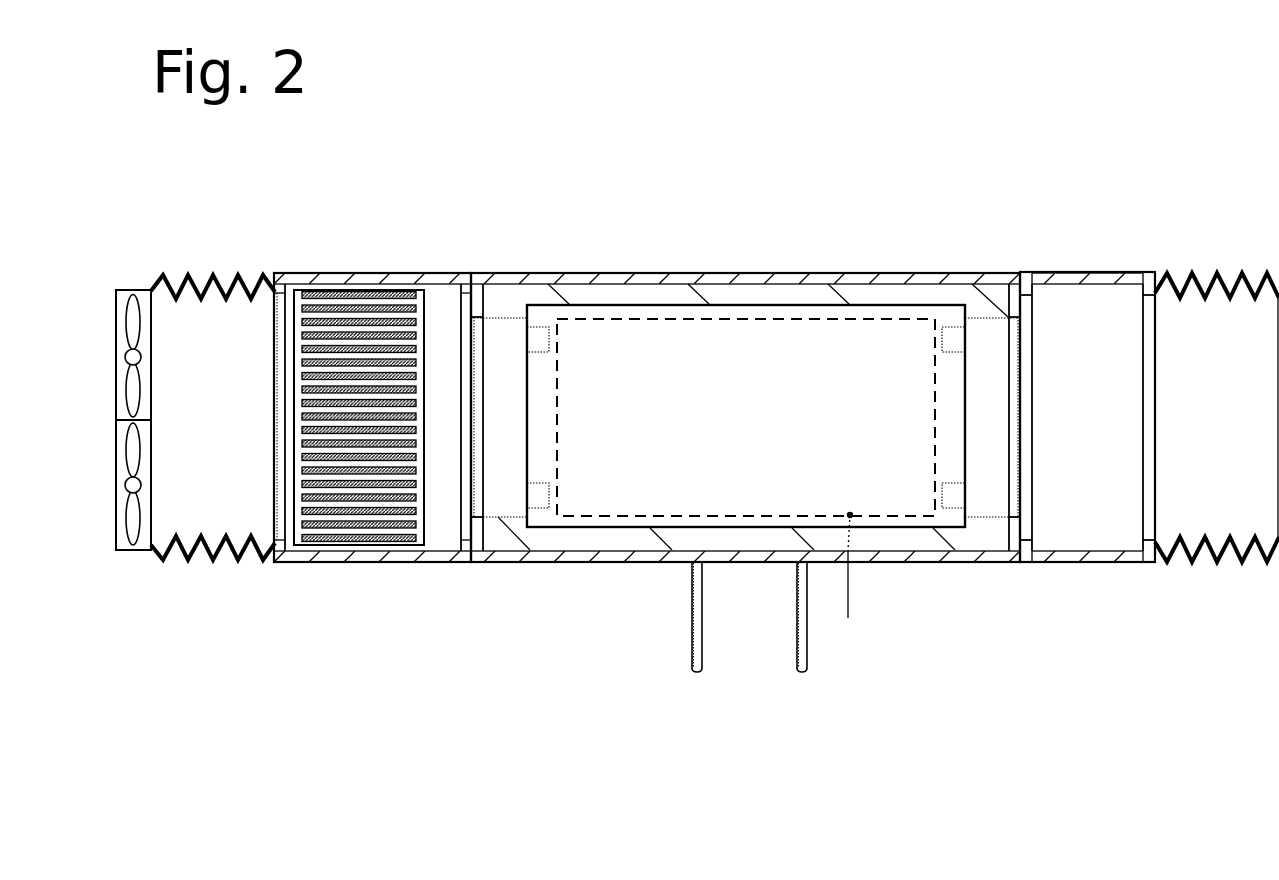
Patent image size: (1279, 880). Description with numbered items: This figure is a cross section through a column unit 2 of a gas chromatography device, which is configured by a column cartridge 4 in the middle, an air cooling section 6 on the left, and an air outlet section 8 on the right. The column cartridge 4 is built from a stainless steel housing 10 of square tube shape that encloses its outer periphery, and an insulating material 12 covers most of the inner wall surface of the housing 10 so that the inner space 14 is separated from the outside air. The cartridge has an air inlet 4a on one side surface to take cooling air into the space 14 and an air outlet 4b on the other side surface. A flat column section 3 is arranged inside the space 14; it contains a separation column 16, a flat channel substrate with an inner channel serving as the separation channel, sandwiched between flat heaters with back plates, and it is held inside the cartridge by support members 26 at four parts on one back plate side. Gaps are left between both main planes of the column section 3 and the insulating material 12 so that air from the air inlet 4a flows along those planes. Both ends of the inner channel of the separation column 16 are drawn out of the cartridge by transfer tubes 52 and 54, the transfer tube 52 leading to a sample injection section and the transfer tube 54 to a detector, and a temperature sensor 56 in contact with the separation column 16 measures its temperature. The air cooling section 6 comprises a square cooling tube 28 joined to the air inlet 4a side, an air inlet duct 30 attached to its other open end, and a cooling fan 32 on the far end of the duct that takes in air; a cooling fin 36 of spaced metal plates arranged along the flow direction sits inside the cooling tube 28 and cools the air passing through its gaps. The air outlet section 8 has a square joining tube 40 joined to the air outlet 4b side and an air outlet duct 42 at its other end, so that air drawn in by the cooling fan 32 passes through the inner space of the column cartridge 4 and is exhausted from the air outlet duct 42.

The column unit 2 is at (873, 195).
The column section 3 is at (748, 305).
The column cartridge 4 is at (942, 253).
The air inlet 4a is at (480, 473).
The air outlet 4b is at (1017, 472).
The air cooling section 6 is at (368, 253).
The air outlet section 8 is at (1143, 252).
The housing 10 is at (877, 275).
The insulating material 12 is at (773, 295).
The space 14 is at (502, 345).
The separation column 16 is at (657, 319).
The support members 26 is at (957, 498).
The cooling tube 28 is at (325, 275).
The air inlet duct 30 is at (213, 278).
The cooling fan 32 is at (127, 290).
The cooling fin 36 is at (363, 517).
The joining tube 40 is at (1098, 277).
The air outlet duct 42 is at (1220, 277).
The transfer tube 52 is at (698, 645).
The transfer tube 54 is at (802, 639).
The temperature sensor 56 is at (850, 515).